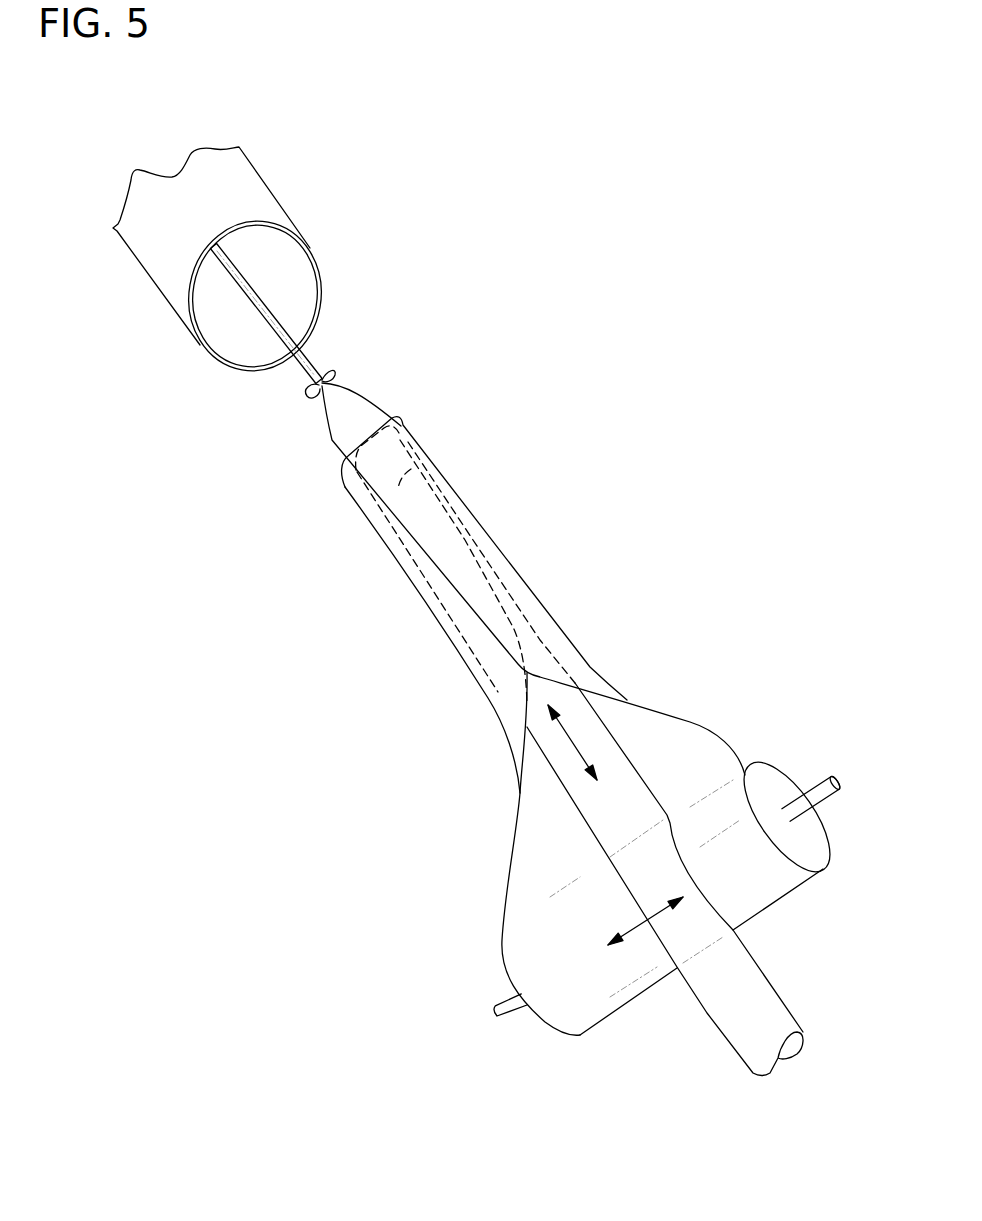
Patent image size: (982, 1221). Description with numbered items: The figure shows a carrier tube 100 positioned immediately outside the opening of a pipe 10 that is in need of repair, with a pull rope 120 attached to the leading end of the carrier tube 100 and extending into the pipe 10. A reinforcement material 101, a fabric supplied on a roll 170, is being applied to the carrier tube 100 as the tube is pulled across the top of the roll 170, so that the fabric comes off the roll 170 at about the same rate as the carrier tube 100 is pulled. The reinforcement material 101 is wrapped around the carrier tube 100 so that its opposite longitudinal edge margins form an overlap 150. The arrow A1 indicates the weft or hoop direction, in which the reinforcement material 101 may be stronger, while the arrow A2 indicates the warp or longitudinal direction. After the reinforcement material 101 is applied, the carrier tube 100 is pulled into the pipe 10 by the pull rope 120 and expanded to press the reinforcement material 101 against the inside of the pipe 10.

The pipe 10 is at (283, 182).
The pull rope 120 is at (264, 297).
The carrier tube 100 is at (360, 396).
The overlap 150 is at (411, 468).
The reinforcement material 101 is at (492, 540).
The roll 170 is at (800, 770).
The arrow indicating warp or longitudinal direction A2 is at (570, 746).
The arrow indicating weft or hoop direction A1 is at (643, 925).